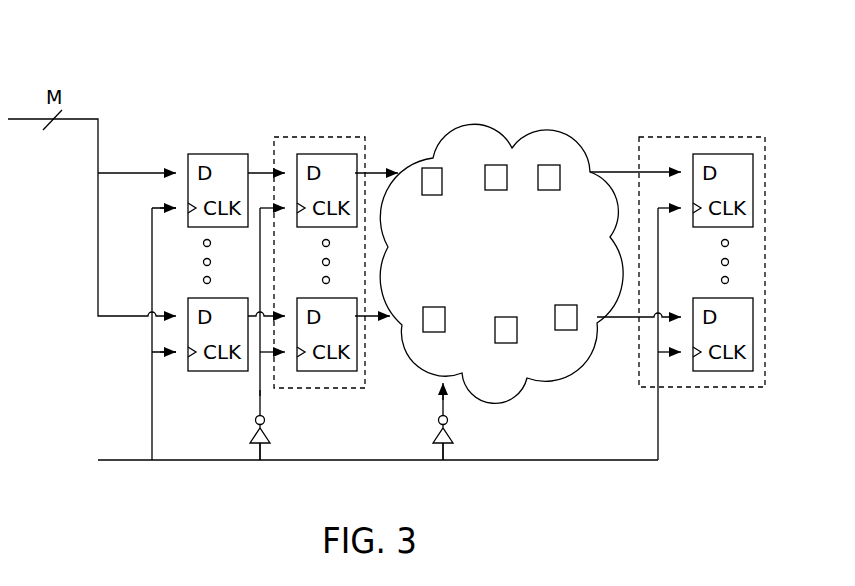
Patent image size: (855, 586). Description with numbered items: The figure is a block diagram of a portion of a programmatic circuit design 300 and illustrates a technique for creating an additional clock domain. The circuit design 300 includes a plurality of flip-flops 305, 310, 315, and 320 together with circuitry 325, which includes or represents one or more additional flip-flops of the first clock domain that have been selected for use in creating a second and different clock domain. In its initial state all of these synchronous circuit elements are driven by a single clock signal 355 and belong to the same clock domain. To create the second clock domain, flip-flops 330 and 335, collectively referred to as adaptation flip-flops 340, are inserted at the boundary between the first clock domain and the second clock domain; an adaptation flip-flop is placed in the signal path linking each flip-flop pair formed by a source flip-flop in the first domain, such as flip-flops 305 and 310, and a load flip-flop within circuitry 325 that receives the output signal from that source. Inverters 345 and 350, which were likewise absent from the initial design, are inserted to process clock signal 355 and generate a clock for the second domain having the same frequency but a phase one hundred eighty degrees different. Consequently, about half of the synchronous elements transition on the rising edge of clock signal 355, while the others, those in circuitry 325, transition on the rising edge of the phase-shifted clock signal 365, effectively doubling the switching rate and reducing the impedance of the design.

The circuit design 300 is at (386, 38).
The flip-flop 305 is at (217, 154).
The flip-flop 310 is at (215, 371).
The flip-flop 315 is at (720, 154).
The flip-flop 320 is at (733, 371).
The circuitry 325 is at (501, 263).
The flip-flop 330 is at (315, 154).
The flip-flop 335 is at (357, 345).
The adaptation flip-flops 340 is at (340, 137).
The inverter 345 is at (265, 422).
The inverter 350 is at (438, 422).
The clock signal 355 is at (356, 461).
The clock signal 365 is at (260, 387).